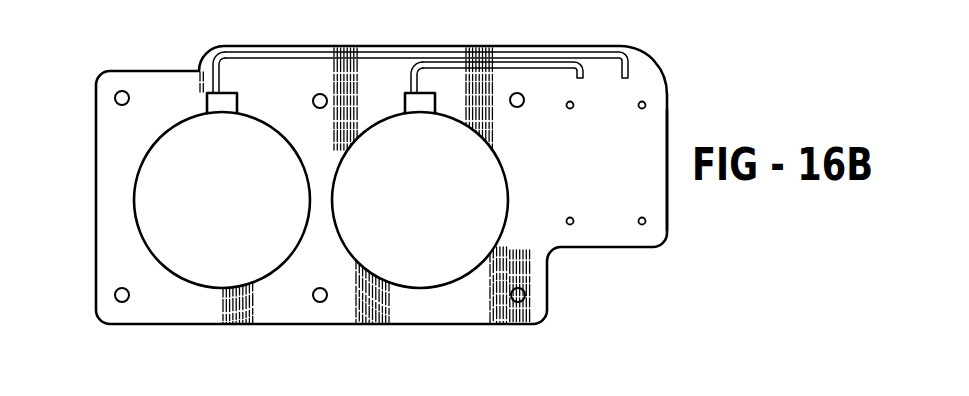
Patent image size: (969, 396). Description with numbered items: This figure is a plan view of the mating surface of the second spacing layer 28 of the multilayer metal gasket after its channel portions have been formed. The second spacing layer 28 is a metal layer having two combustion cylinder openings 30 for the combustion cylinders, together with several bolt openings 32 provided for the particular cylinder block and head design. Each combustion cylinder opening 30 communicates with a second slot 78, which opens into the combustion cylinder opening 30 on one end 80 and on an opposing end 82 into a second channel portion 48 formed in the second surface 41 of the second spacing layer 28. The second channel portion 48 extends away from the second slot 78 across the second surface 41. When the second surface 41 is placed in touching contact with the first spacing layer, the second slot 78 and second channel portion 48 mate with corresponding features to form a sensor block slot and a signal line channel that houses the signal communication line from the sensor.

The second spacing layer 28 is at (657, 85).
The combustion cylinder opening 30 is at (140, 187).
The bolt opening 32 is at (116, 100).
The second surface 41 is at (660, 128).
The second channel portion 48 is at (292, 58).
The second slot 78 is at (234, 99).
The one end of second slot 80 is at (232, 112).
The opposing end of second slot 82 is at (207, 68).